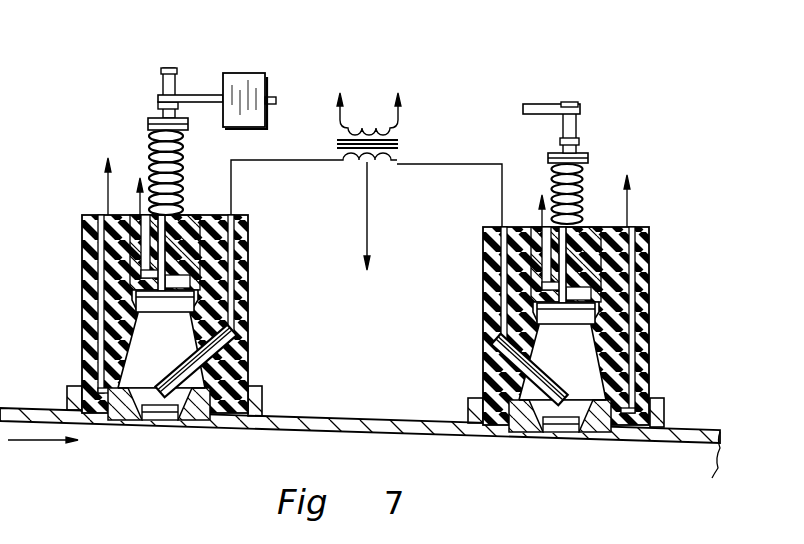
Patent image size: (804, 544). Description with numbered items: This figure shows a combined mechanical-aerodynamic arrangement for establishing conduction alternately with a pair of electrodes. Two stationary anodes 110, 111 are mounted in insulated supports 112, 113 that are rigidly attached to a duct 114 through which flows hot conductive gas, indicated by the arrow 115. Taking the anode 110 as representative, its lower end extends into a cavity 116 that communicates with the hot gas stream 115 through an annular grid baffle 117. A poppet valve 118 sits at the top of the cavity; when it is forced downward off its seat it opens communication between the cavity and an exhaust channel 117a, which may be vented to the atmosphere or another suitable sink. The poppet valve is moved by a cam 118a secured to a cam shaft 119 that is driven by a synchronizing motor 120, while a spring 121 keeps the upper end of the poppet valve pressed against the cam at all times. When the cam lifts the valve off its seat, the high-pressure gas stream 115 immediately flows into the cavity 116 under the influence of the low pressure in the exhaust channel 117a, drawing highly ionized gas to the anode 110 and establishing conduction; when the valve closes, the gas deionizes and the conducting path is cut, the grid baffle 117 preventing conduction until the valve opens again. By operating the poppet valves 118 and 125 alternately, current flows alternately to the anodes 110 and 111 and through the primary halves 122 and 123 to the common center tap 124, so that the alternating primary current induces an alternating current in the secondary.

The stationary anode 110 is at (170, 353).
The stationary anode 111 is at (533, 369).
The insulated support 112 is at (237, 343).
The insulated support 113 is at (651, 294).
The duct 114 is at (340, 416).
The hot gas stream 115 is at (36, 440).
The cavity 116 is at (135, 340).
The annular grid baffle 117 is at (132, 421).
The exhaust channel 117a is at (120, 296).
The poppet valve 118 is at (165, 303).
The cam 118a is at (168, 70).
The cam shaft 119 is at (203, 102).
The synchronizing motor 120 is at (241, 74).
The spring 121 is at (173, 136).
The primary half 122 is at (355, 165).
The primary half 123 is at (380, 165).
The common center tap 124 is at (368, 217).
The poppet valve 125 is at (566, 328).